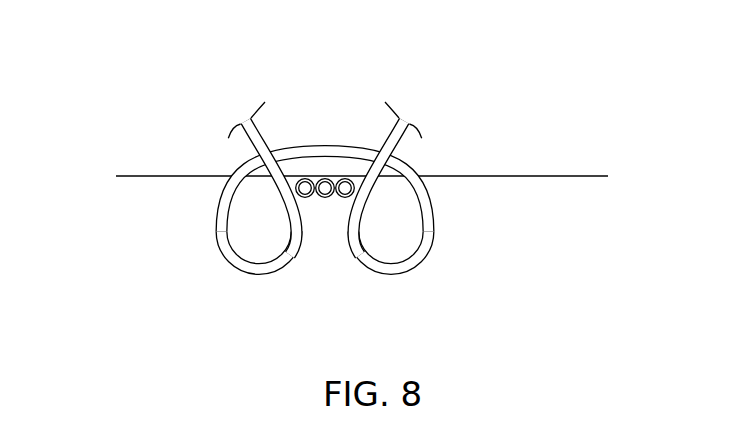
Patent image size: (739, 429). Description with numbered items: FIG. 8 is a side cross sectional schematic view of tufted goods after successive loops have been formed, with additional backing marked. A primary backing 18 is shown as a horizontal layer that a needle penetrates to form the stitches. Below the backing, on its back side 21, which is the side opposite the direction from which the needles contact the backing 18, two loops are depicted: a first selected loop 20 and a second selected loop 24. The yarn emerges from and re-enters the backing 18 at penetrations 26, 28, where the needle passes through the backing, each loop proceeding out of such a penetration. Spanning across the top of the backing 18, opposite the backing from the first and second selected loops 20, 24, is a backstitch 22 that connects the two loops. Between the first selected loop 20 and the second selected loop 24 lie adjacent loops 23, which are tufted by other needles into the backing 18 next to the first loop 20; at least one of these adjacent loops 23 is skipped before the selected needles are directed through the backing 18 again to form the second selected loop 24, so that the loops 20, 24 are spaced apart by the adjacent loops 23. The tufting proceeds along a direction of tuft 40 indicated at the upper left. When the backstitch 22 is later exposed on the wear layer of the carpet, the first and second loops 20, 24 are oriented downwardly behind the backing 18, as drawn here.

The primary backing 18 is at (523, 175).
The first selected loop 20 is at (258, 277).
The back side of the backing 21 is at (582, 190).
The backstitch 22 is at (329, 145).
The adjacent loops 23 is at (306, 204).
The second selected loop 24 is at (387, 277).
The penetration 26 is at (420, 177).
The penetration 28 is at (238, 177).
The direction of tuft 40 is at (158, 61).